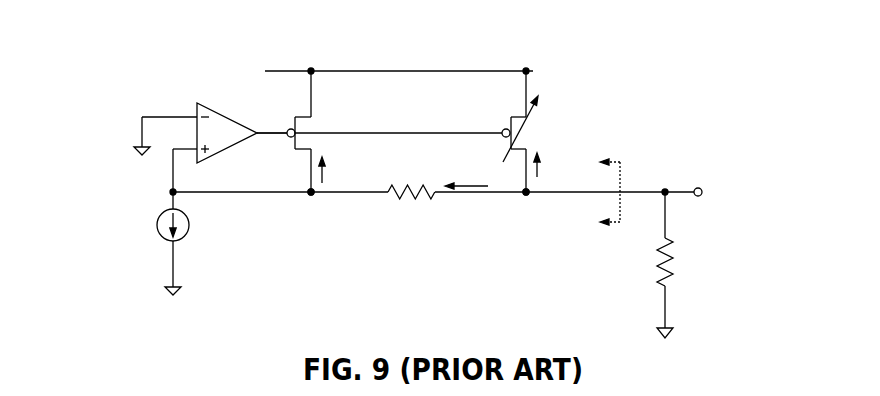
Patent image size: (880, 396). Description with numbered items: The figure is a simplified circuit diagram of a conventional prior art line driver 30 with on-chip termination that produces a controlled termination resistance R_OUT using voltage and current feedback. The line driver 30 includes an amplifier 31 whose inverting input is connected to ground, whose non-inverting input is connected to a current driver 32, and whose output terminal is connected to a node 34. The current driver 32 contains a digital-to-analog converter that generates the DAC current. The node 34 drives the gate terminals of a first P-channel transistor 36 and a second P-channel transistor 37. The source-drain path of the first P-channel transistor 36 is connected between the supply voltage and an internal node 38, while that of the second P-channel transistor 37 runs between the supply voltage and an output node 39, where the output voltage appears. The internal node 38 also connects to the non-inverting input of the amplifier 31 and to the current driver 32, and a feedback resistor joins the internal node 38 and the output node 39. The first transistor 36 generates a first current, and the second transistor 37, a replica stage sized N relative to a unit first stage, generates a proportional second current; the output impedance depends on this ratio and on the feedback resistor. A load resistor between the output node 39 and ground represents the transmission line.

The line driver circuit 30 is at (225, 44).
The amplifier 31 is at (168, 82).
The current driver 32 is at (136, 214).
The node 34 is at (267, 128).
The first P-channel transistor 36 is at (282, 109).
The second P-channel transistor 37 is at (491, 112).
The internal node 38 is at (311, 195).
The output node 39 is at (526, 195).